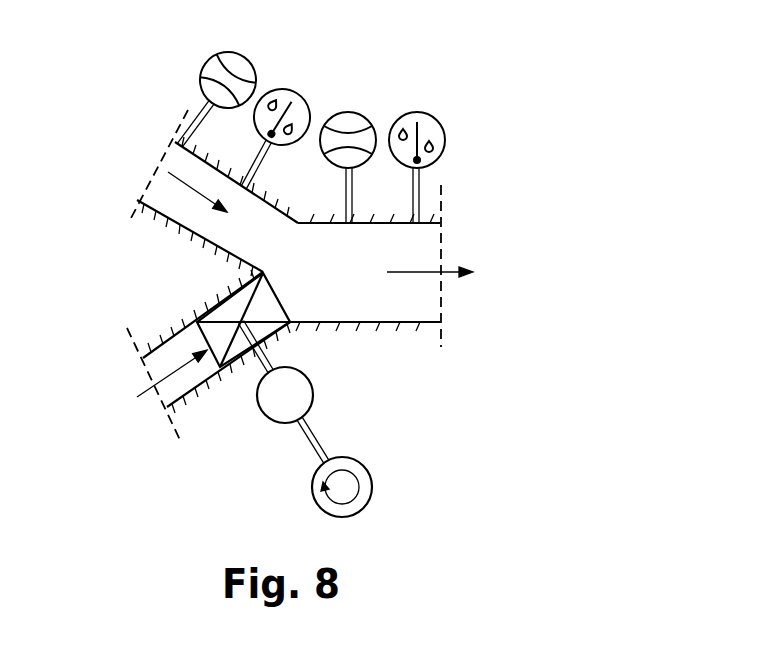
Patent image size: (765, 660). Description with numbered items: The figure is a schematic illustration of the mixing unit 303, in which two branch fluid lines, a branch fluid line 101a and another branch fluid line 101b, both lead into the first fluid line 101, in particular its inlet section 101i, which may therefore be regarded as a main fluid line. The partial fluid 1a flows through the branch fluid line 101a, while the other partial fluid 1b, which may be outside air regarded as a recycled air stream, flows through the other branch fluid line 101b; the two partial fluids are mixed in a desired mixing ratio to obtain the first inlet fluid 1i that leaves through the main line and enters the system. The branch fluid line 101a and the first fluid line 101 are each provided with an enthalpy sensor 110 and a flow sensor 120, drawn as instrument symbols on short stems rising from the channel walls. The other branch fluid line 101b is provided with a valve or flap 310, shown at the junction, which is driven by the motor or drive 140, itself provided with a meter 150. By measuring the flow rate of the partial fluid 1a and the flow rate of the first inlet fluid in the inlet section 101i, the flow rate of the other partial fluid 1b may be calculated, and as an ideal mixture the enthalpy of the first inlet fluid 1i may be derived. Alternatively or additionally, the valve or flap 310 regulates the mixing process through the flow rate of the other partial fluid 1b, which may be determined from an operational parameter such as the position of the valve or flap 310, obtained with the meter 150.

The partial fluid 1a is at (166, 190).
The partial fluid 1b is at (159, 356).
The branch fluid line 101a is at (149, 238).
The branch fluid line 101b is at (152, 350).
The first fluid line 101 is at (407, 307).
The inlet section of the first fluid line 101i is at (352, 333).
The first inlet fluid 1i is at (422, 270).
The enthalpy sensor 110 is at (292, 89).
The flow sensor 120 is at (206, 60).
The motor or drive 140 is at (308, 412).
The meter 150 is at (371, 492).
The mixing unit 303 is at (501, 162).
The valve or flap 310 is at (240, 328).